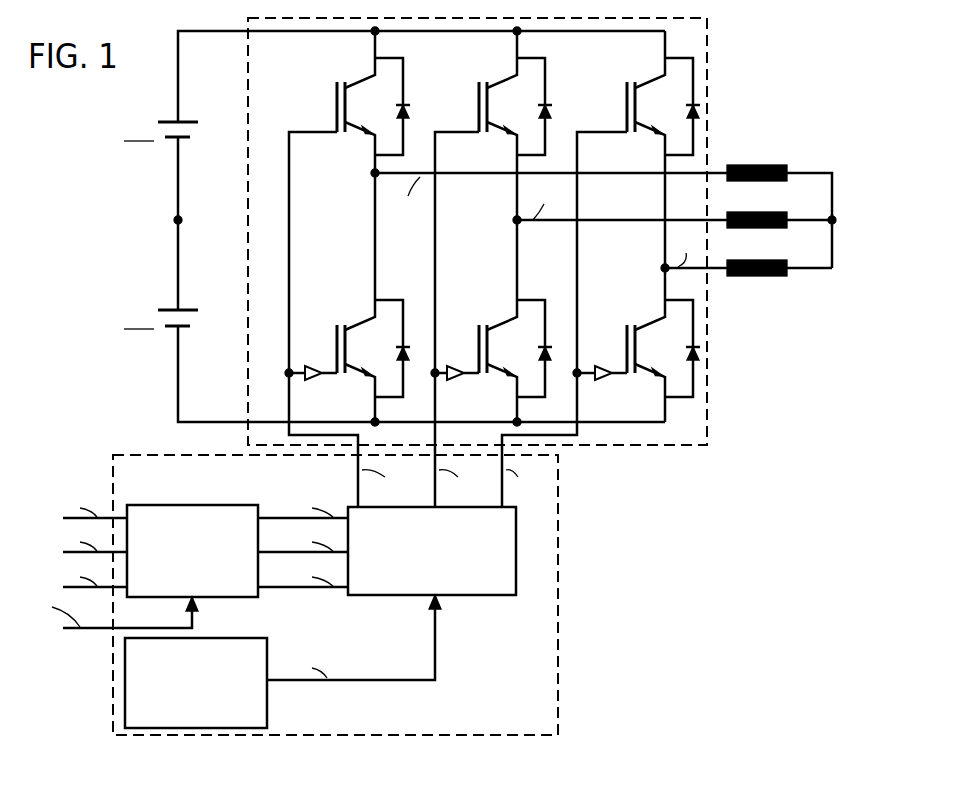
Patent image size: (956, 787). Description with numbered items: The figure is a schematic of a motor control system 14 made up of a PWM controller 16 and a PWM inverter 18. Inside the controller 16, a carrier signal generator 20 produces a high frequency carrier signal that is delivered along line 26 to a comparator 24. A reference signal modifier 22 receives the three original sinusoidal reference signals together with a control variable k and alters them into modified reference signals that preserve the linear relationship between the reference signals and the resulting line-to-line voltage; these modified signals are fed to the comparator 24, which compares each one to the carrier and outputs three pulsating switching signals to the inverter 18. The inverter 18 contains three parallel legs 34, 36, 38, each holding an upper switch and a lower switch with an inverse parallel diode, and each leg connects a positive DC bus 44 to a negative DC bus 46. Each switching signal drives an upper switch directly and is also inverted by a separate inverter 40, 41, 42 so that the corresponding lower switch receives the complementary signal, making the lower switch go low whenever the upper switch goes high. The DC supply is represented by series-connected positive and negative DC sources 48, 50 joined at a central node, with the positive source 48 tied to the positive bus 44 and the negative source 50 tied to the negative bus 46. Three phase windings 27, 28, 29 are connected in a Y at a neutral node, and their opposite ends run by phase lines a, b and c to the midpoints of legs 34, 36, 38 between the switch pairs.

The motor control system 14 is at (62, 472).
The PWM controller 16 is at (560, 527).
The PWM inverter 18 is at (708, 422).
The carrier signal generator 20 is at (125, 678).
The reference signal modifier 22 is at (187, 505).
The comparator 24 is at (472, 597).
The line 26 is at (433, 655).
The phase winding 27 is at (752, 165).
The phase winding 28 is at (782, 210).
The phase winding 29 is at (757, 278).
The inverter leg 34 is at (375, 249).
The inverter leg 36 is at (517, 249).
The inverter leg 38 is at (665, 249).
The inverter 40 is at (318, 379).
The inverter 41 is at (458, 379).
The inverter 42 is at (600, 379).
The positive DC bus 44 is at (233, 33).
The negative DC bus 46 is at (188, 425).
The positive DC source 48 is at (130, 146).
The negative DC source 50 is at (128, 337).